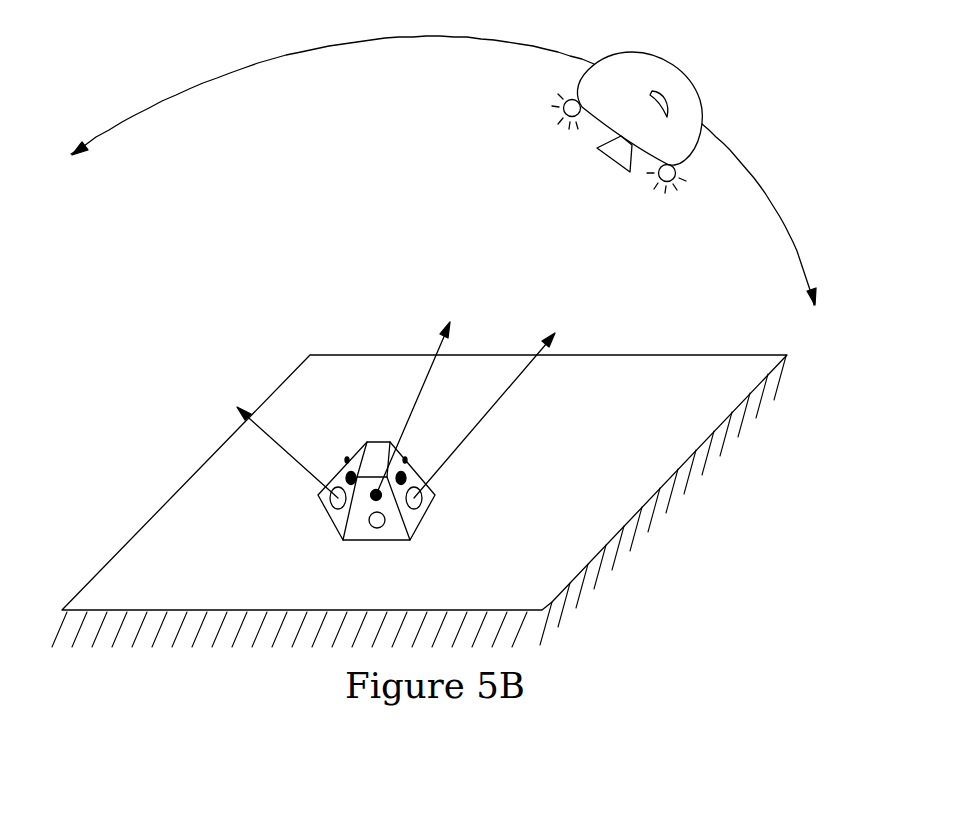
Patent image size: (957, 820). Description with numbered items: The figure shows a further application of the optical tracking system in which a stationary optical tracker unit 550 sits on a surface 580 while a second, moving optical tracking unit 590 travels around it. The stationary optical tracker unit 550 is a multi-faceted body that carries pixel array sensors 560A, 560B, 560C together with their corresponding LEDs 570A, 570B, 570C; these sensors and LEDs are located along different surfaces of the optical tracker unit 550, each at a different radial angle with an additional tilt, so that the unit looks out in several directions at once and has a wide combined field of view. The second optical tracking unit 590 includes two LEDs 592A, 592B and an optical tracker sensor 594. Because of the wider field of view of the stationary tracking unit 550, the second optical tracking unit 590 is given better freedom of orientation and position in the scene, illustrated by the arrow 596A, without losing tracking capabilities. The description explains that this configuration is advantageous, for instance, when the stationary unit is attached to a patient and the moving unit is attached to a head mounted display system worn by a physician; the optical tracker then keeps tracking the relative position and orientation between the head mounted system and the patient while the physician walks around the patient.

The stationary optical tracker unit 550 is at (371, 444).
The pixel array sensor 560A is at (330, 490).
The pixel array sensor 560B is at (378, 522).
The pixel array sensor 560C is at (420, 497).
The LED 570A is at (346, 459).
The LED 570B is at (371, 485).
The LED 570C is at (407, 460).
The surface 580 is at (677, 355).
The second optical tracking unit 590 is at (671, 63).
The LED 592A is at (562, 110).
The LED 592B is at (657, 181).
The optical tracker sensor 594 is at (610, 166).
The arrow 596A is at (224, 78).